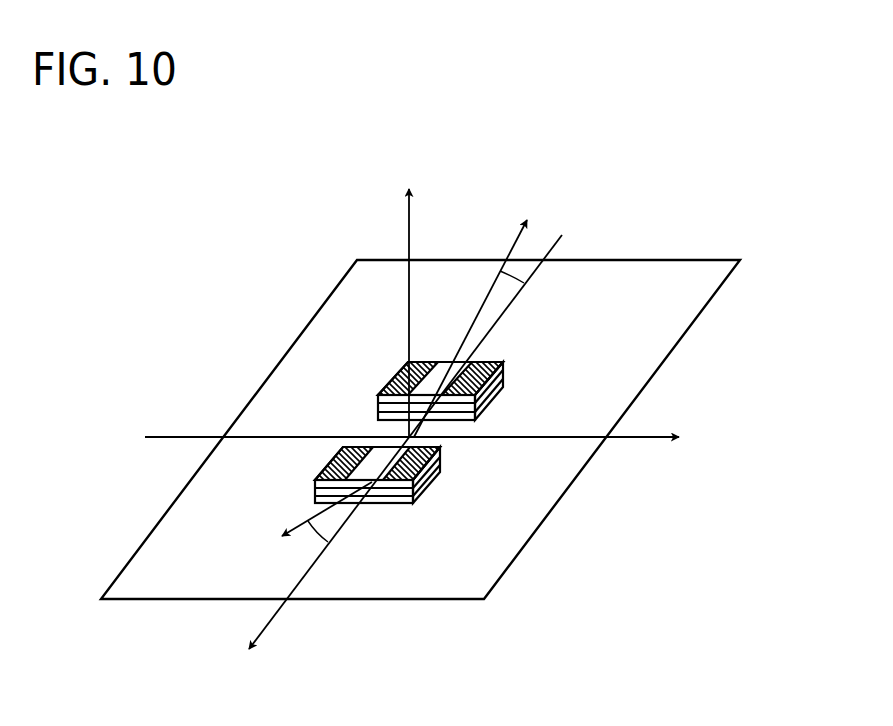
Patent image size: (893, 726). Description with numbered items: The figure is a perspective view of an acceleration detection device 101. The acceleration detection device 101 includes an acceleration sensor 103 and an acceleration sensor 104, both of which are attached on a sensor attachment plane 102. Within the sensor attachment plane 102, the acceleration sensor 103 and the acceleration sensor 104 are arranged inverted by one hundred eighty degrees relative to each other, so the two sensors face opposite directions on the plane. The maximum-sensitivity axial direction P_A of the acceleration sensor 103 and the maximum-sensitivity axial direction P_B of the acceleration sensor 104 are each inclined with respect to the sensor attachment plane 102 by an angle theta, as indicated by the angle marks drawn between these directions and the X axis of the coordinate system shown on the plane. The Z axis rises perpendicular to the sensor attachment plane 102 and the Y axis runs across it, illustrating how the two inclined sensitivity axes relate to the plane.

The acceleration detection device 101 is at (728, 187).
The sensor attachment plane 102 is at (672, 322).
The acceleration sensor 103 is at (440, 468).
The acceleration sensor 104 is at (503, 377).